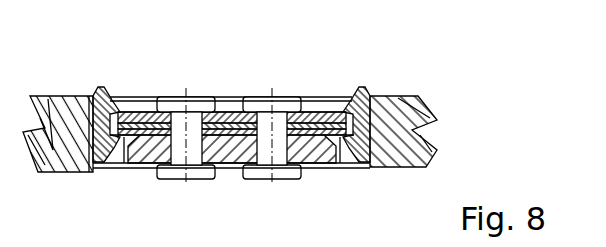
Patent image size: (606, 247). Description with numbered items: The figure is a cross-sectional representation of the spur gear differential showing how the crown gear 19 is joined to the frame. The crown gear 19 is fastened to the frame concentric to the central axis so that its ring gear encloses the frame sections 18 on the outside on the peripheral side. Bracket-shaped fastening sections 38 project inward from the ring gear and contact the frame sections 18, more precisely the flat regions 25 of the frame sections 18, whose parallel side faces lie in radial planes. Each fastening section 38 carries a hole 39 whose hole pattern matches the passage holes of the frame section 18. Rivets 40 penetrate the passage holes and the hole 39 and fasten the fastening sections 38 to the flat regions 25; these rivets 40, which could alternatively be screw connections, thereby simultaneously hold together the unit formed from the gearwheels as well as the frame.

The frame section 18 is at (262, 108).
The crown gear 19 is at (390, 128).
The flat region 25 is at (312, 104).
The fastening section 38 is at (145, 167).
The hole 39 is at (264, 150).
The rivet 40 is at (192, 105).